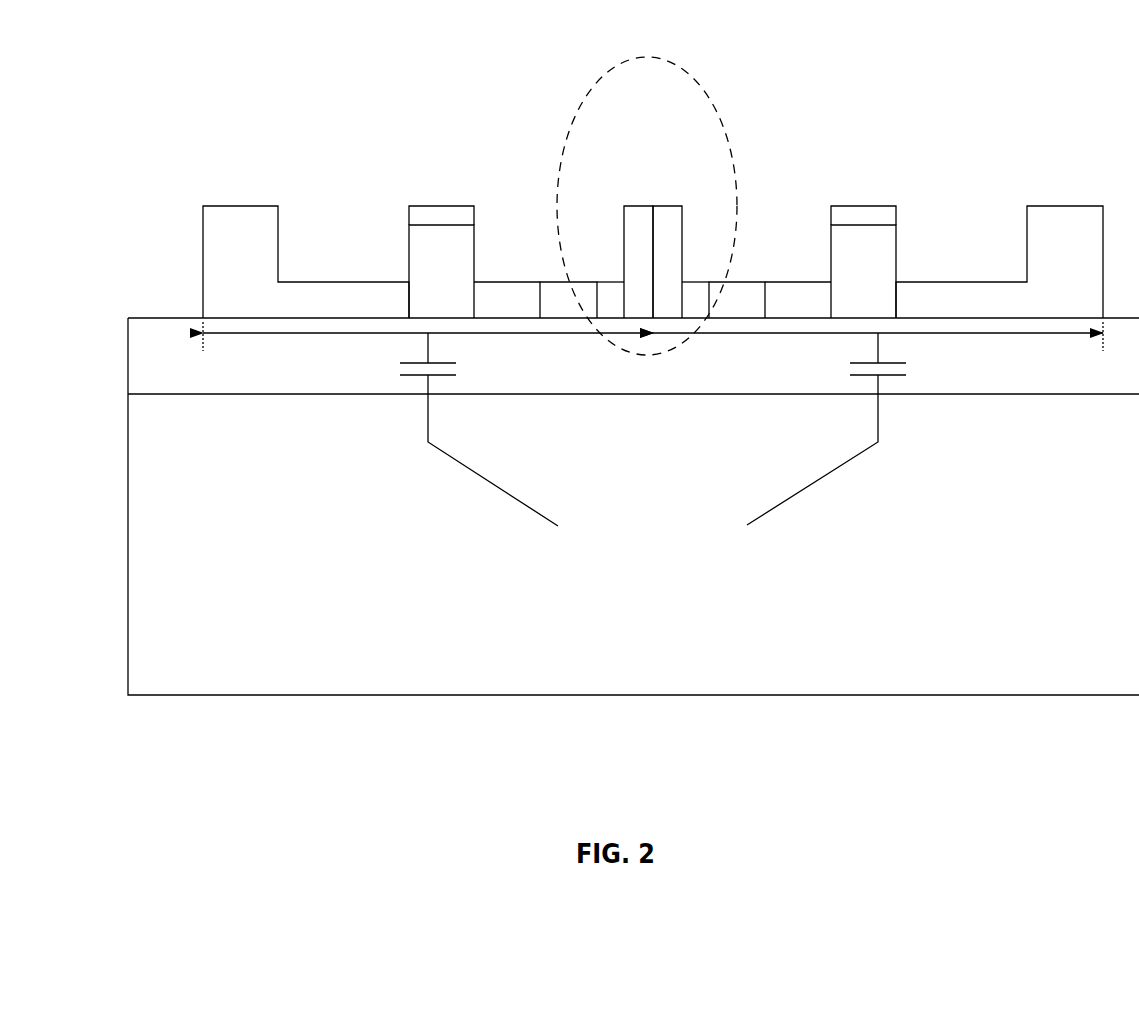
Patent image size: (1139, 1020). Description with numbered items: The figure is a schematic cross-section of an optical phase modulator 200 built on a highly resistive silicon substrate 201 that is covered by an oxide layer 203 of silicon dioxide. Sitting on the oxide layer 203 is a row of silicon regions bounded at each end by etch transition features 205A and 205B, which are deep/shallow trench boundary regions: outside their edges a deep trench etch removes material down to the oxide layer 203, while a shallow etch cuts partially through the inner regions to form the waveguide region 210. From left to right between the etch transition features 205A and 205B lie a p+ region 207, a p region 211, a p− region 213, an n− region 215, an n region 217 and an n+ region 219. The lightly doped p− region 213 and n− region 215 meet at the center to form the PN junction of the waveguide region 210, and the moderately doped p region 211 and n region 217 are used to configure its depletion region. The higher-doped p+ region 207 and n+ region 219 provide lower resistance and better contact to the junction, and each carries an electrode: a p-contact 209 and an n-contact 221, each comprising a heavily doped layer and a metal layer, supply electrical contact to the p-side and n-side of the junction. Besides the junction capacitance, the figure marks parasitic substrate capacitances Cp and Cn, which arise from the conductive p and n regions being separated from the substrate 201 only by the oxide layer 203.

The modulator 200 is at (288, 130).
The substrate 201 is at (738, 558).
The oxide layer 203 is at (710, 386).
The etch transition feature 205A is at (352, 312).
The etch transition feature 205B is at (1065, 312).
The p+ region 207 is at (510, 312).
The p-contact 209 is at (442, 201).
The waveguide region 210 is at (689, 66).
The p region 211 is at (556, 277).
The p− region 213 is at (639, 201).
The n− region 215 is at (669, 201).
The n region 217 is at (746, 279).
The n+ region 219 is at (878, 312).
The n-contact 221 is at (872, 201).